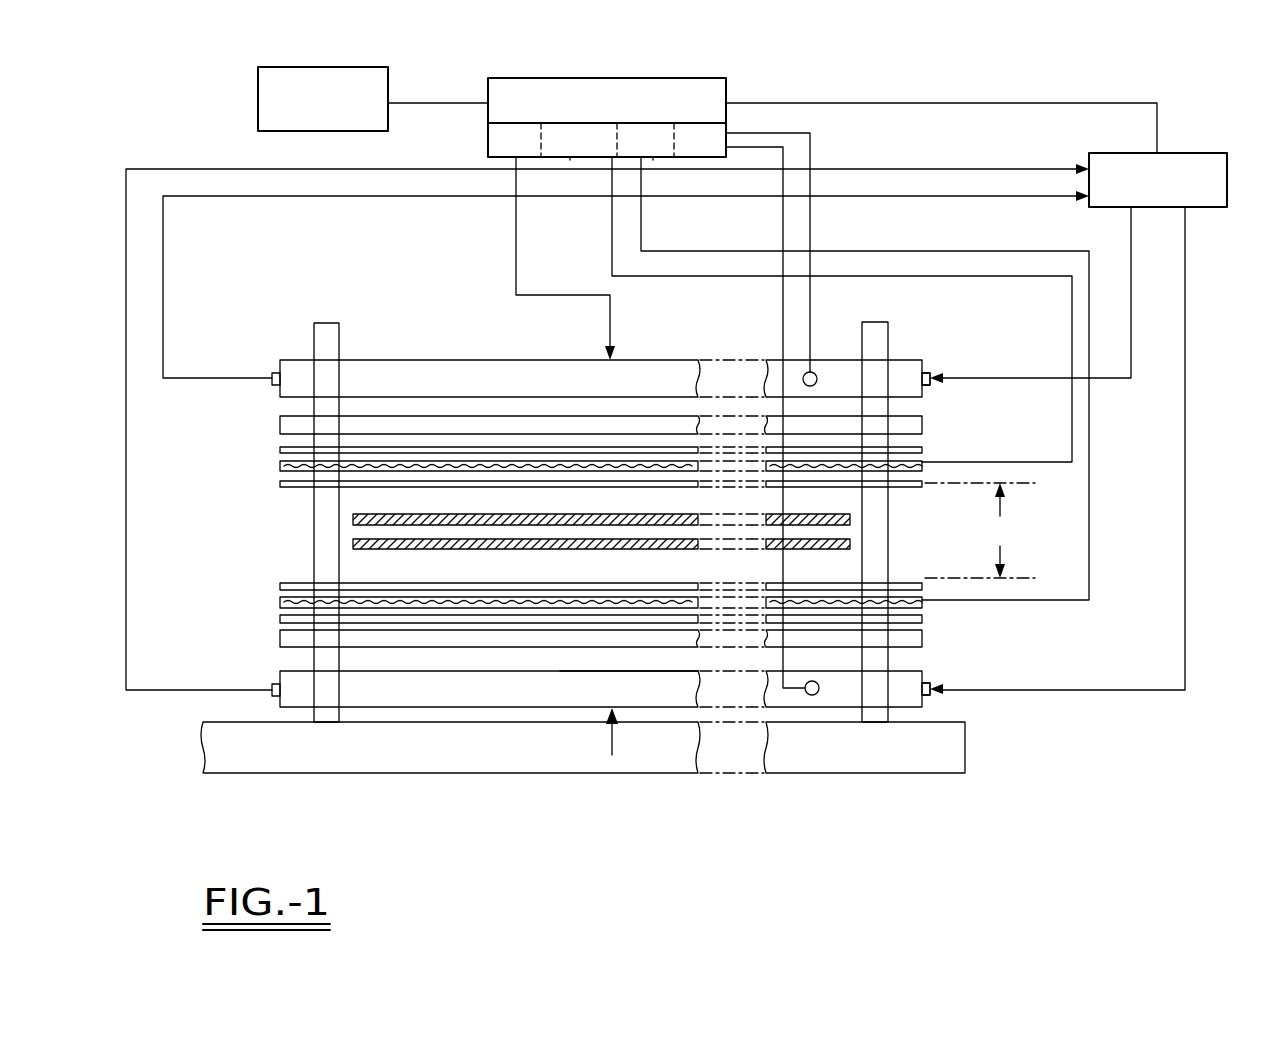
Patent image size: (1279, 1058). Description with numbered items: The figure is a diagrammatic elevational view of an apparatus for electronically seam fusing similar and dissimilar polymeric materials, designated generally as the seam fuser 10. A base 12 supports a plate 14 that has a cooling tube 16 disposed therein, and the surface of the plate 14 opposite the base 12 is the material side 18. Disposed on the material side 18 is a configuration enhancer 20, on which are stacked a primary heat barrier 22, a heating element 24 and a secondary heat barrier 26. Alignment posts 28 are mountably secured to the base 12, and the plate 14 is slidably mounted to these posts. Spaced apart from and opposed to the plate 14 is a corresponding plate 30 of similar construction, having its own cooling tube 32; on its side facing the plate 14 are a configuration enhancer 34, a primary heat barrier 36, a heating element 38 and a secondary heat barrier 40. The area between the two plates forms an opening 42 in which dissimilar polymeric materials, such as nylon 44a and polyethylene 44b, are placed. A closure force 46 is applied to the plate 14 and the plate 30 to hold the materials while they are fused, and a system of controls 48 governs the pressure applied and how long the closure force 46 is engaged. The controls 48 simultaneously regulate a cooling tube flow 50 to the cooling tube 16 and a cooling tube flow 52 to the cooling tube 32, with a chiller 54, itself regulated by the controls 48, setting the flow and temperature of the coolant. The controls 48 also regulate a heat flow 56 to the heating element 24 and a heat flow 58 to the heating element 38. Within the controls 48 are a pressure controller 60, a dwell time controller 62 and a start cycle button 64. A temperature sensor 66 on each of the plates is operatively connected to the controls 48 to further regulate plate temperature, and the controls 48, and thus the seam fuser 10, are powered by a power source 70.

The seam fusing apparatus 10 is at (1062, 737).
The base 12 is at (470, 773).
The plate 14 is at (560, 700).
The cooling tube 16 is at (926, 683).
The material side 18 is at (603, 671).
The configuration enhancer 20 is at (280, 638).
The primary heat barrier 22 is at (280, 619).
The heating element 24 is at (280, 602).
The secondary heat barrier 26 is at (280, 586).
The alignment posts 28 is at (339, 330).
The corresponding plate 30 is at (530, 360).
The cooling tube 32 is at (932, 372).
The configuration enhancer 34 is at (280, 425).
The primary heat barrier 36 is at (280, 450).
The heating element 38 is at (280, 466).
The secondary heat barrier 40 is at (280, 484).
The opening 42 is at (980, 530).
The nylon 44a is at (505, 514).
The polyethylene 44b is at (514, 549).
The closure force 46 is at (612, 755).
The controls 48 is at (488, 132).
The cooling tube flow 50 is at (1185, 406).
The cooling tube flow 52 is at (1112, 378).
The chiller 54 is at (1200, 153).
The heat flow 56 is at (733, 251).
The heat flow 58 is at (738, 276).
The pressure controller 60 is at (488, 151).
The dwell time controller 62 is at (585, 160).
The start cycle button 64 is at (655, 160).
The temperature sensor 66 is at (815, 372).
The power source 70 is at (258, 103).